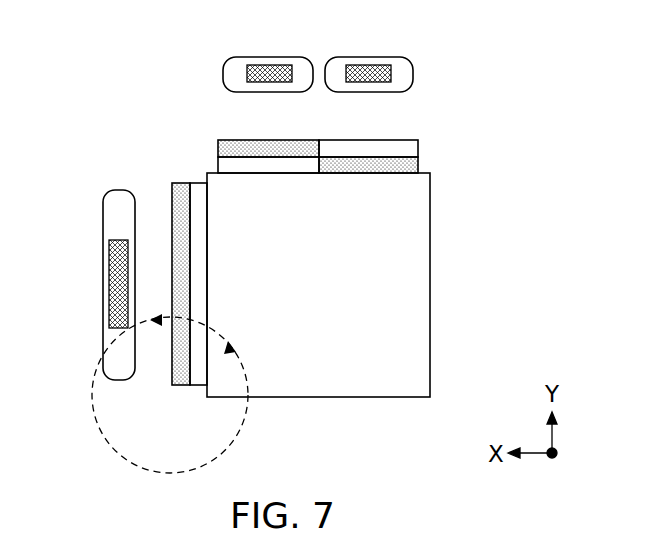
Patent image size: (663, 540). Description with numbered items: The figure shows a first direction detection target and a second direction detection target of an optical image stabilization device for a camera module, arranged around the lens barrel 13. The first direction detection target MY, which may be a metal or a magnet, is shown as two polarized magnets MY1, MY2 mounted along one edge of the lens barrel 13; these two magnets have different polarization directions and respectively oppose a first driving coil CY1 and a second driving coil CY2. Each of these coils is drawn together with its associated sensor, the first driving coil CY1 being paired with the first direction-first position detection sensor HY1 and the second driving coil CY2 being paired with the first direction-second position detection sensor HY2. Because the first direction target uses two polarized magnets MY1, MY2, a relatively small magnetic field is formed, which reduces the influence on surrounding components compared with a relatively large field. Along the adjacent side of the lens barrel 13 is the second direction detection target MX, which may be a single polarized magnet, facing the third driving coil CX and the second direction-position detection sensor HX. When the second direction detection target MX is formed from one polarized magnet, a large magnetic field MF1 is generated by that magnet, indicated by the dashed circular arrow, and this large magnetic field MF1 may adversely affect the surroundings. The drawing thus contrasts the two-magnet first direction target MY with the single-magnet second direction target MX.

The lens barrel 13 is at (431, 330).
The second direction detection target MX is at (185, 178).
The first direction detection target MY is at (394, 208).
The polarized magnet MY1 is at (273, 163).
The polarized magnet MY2 is at (368, 167).
The second direction-position detection sensor HX is at (90, 261).
The third driving coil CX is at (103, 284).
The first direction-first position detection sensor HY1 is at (228, 51).
The first driving coil CY1 is at (269, 46).
The first direction-second position detection sensor HY2 is at (410, 51).
The second driving coil CY2 is at (370, 55).
The large magnetic field MF1 is at (92, 397).